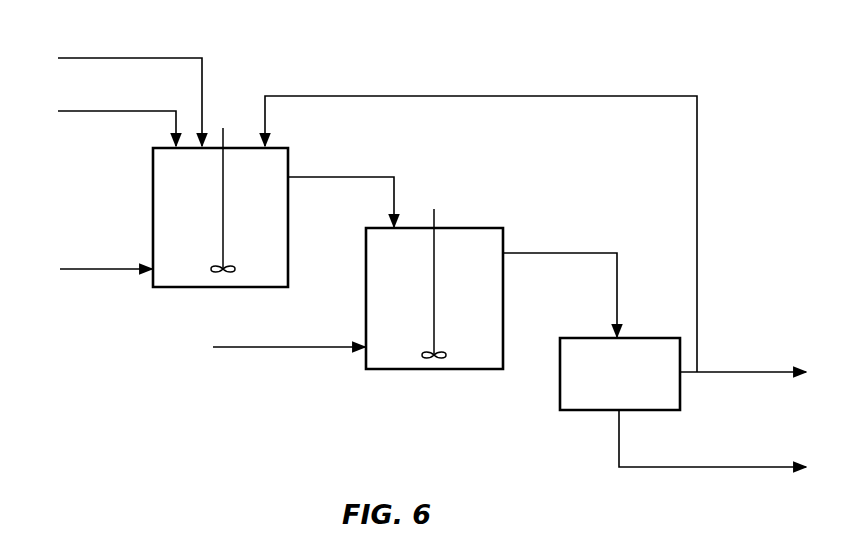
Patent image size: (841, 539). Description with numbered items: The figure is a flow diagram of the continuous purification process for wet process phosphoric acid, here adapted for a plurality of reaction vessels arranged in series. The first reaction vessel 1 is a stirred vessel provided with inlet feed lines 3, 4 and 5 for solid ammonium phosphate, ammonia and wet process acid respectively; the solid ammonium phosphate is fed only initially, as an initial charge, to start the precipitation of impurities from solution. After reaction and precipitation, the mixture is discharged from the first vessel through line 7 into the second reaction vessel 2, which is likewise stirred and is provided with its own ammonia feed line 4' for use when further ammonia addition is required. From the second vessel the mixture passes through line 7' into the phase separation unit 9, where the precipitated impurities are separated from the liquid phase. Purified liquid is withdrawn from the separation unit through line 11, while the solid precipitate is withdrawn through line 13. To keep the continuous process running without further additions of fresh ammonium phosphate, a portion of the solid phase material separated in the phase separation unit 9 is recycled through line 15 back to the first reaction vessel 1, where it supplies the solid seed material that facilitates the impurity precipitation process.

The reaction vessel 1 is at (172, 288).
The reaction vessel 2 is at (434, 289).
The inlet feed line 3 is at (128, 112).
The inlet feed line 4 is at (106, 251).
The ammonia feed line 4' is at (289, 332).
The inlet feed line 5 is at (162, 58).
The line 7 is at (341, 180).
The line 7' is at (560, 277).
The phase separation unit 9 is at (650, 337).
The line 11 is at (726, 466).
The line 13 is at (740, 371).
The line 15 is at (570, 94).